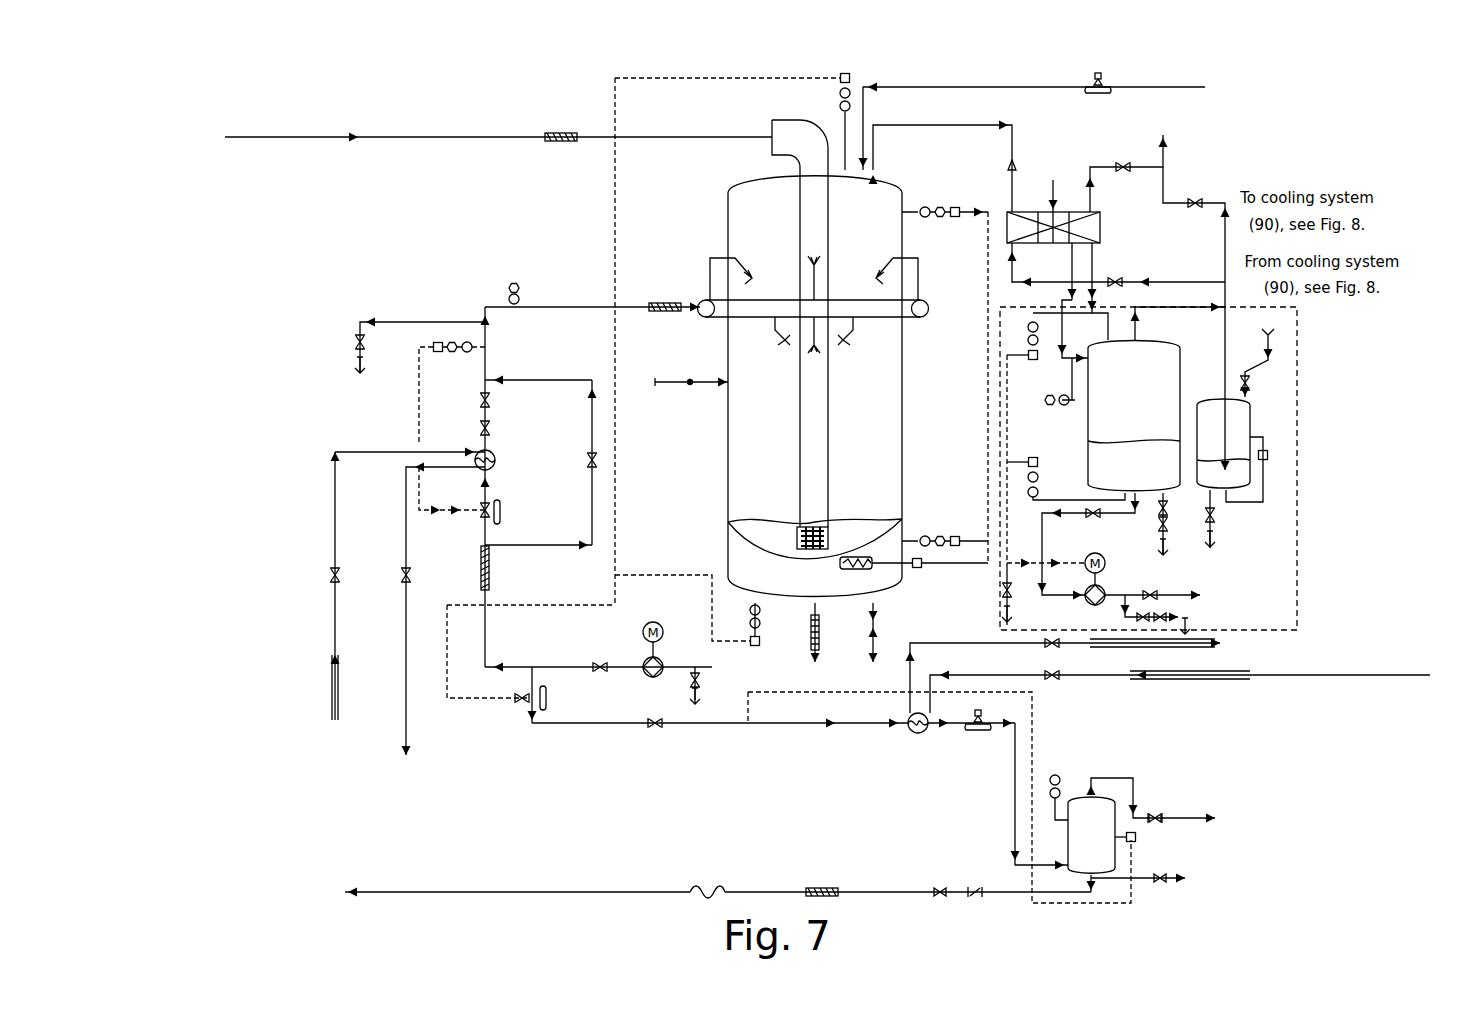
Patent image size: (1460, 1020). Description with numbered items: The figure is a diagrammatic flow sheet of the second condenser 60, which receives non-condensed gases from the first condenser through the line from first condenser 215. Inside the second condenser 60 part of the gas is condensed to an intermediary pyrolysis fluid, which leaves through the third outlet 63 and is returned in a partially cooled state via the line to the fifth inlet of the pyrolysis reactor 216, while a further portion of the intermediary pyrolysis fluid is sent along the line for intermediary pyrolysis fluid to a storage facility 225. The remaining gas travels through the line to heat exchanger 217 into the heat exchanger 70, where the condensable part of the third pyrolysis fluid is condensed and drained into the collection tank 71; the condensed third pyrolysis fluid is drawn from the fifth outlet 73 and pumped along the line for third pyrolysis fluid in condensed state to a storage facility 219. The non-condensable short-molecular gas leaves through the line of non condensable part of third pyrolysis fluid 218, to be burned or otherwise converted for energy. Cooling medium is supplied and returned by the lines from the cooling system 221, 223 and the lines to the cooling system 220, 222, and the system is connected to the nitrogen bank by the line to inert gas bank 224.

The second condenser 60 is at (755, 244).
The heat exchanger 70 is at (1055, 203).
The collection tank 71 is at (1129, 395).
The fifth outlet 73 is at (1290, 436).
The third outlet 63 is at (701, 741).
The line from first condenser 215 is at (433, 125).
The line to fifth inlet of pyrolysis reactor 216 is at (602, 890).
The line to heat exchanger 217 is at (728, 128).
The line of non condensable part of third pyrolysis fluid 218 is at (1249, 167).
The line for third pyrolysis fluid in condensed state to a storage facility 219 is at (1255, 595).
The line to cooling system 220 is at (1156, 669).
The line from cooling system 221 is at (1180, 691).
The line to cooling system 222 is at (431, 634).
The line from cooling system 223 is at (255, 612).
The line to inert gas bank 224 is at (1129, 112).
The line for intermediary pyrolysis fluid to a storage facility 225 is at (1245, 833).